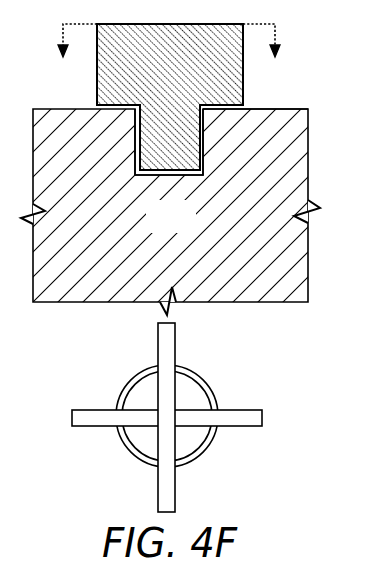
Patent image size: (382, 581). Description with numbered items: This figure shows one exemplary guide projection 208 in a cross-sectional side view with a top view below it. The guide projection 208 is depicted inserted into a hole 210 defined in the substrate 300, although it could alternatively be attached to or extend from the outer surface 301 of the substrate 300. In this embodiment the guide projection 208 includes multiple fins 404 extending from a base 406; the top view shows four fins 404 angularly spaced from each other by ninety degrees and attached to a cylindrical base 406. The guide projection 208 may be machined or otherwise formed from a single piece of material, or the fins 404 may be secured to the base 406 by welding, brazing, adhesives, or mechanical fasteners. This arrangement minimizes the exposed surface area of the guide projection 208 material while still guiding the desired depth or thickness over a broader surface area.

The guide projection 208 is at (97, 63).
The hole 210 is at (135, 136).
The substrate 300 is at (188, 226).
The outer surface 301 is at (293, 109).
The fins 404 is at (243, 67).
The base 406 is at (148, 443).